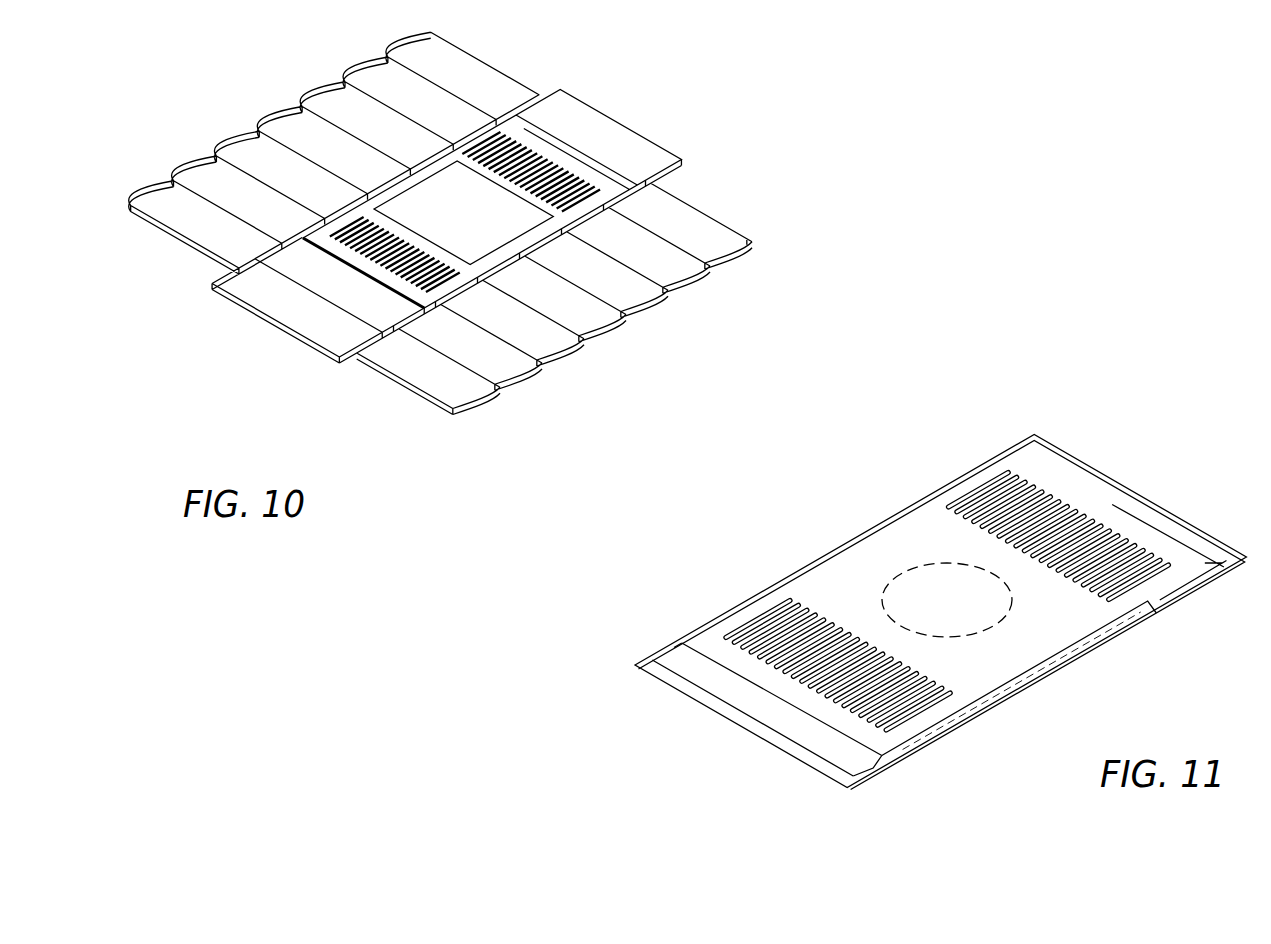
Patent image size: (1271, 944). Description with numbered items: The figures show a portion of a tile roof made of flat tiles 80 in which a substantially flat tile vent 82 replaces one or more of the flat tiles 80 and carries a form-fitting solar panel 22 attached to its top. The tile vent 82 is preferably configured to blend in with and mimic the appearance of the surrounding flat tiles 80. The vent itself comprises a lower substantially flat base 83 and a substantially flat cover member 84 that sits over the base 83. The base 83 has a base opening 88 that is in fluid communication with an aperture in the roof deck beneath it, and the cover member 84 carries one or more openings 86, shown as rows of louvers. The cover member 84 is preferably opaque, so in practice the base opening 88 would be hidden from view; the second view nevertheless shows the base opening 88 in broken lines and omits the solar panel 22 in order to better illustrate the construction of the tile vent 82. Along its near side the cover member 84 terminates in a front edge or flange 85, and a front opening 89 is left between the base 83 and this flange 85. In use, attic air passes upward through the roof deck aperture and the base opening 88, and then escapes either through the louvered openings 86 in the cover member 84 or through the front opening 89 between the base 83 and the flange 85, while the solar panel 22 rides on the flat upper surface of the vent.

In FIG. 10, the solar panel 22 is at (478, 229).
In FIG. 10, the flat tiles 80 is at (703, 222).
In FIG. 10, the tile vent 82 is at (604, 165).
In FIG. 11, the tile vent 82 is at (641, 602).
In FIG. 11, the base 83 is at (743, 710).
In FIG. 10, the cover member 84 is at (347, 252).
In FIG. 11, the cover member 84 is at (993, 470).
In FIG. 11, the front edge or flange 85 is at (995, 690).
In FIG. 10, the openings 86 is at (550, 170).
In FIG. 11, the openings 86 is at (768, 610).
In FIG. 11, the base opening 88 is at (912, 577).
In FIG. 11, the front opening 89 is at (1115, 640).